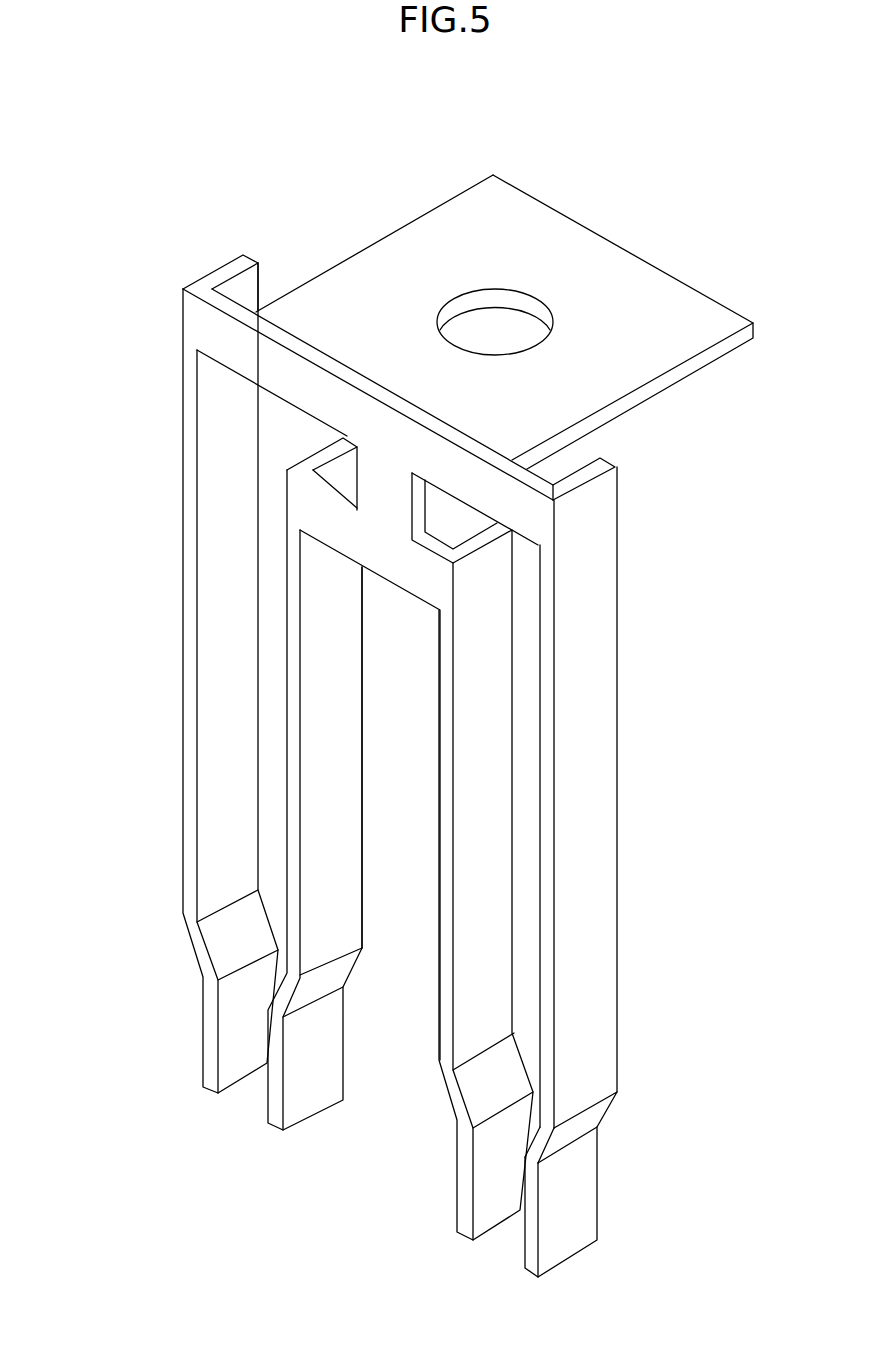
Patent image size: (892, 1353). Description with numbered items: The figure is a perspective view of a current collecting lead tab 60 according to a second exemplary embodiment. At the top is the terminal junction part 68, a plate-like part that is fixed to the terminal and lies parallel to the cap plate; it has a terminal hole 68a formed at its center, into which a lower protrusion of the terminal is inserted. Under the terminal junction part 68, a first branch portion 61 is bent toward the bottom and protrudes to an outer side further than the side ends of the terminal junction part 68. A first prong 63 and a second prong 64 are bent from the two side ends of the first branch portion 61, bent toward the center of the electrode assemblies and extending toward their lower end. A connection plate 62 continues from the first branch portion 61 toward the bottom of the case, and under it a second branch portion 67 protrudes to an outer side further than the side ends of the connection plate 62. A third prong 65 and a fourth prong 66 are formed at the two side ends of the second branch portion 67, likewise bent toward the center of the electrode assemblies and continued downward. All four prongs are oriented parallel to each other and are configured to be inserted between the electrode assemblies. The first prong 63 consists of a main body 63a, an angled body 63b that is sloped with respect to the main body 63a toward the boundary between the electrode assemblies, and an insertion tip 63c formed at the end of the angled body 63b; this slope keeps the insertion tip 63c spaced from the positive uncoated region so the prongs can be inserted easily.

The current collecting lead tab 60 is at (383, 193).
The first branch portion 61 is at (215, 330).
The connection plate 62 is at (385, 488).
The first prong 63 is at (627, 705).
The main body 63a is at (590, 572).
The angled body 63b is at (600, 1115).
The insertion tip 63c is at (575, 1195).
The second prong 64 is at (225, 660).
The third prong 65 is at (480, 800).
The fourth prong 66 is at (325, 780).
The second branch portion 67 is at (330, 520).
The terminal junction part 68 is at (660, 305).
The terminal hole 68a is at (503, 326).